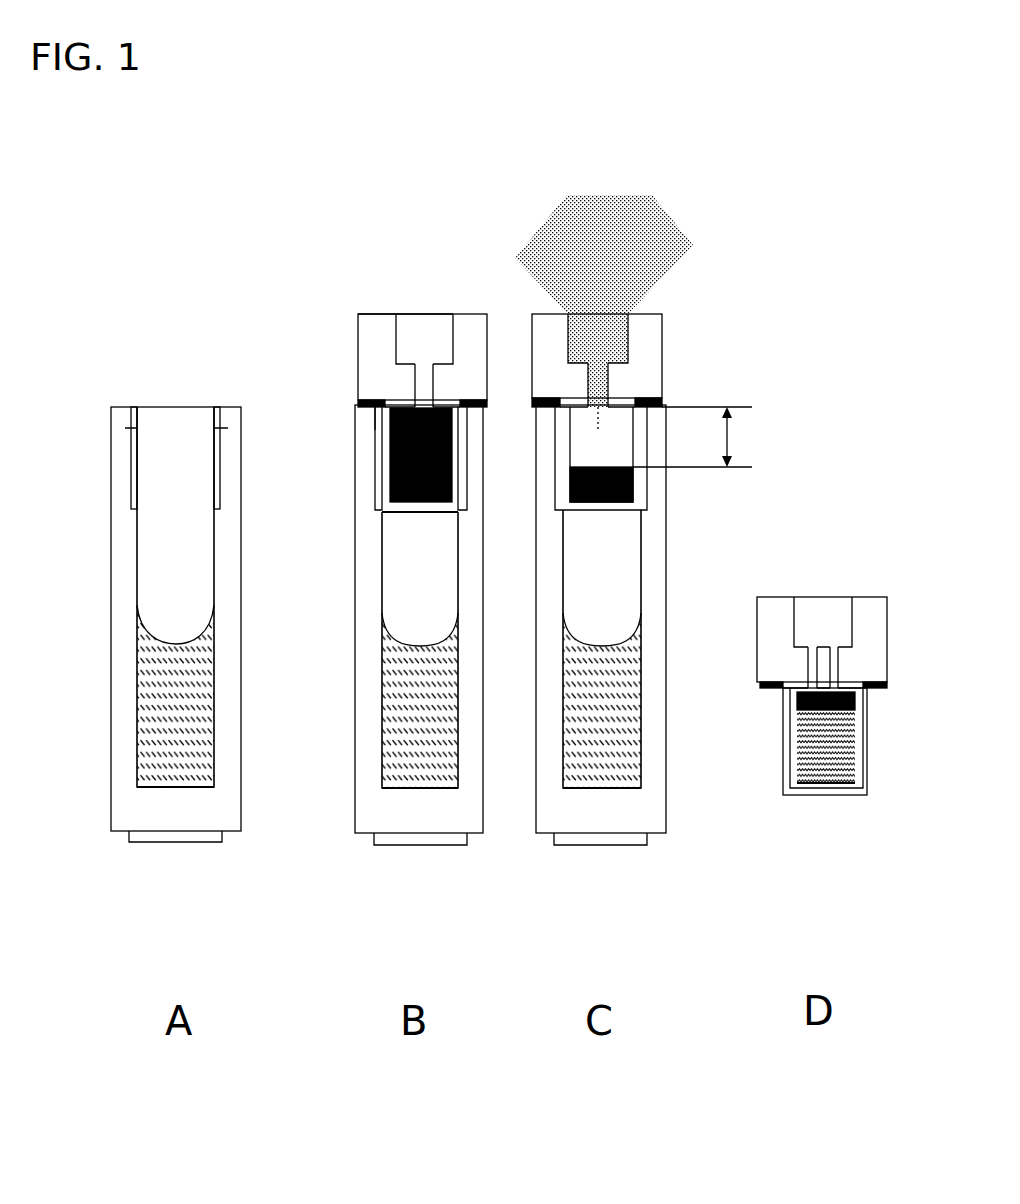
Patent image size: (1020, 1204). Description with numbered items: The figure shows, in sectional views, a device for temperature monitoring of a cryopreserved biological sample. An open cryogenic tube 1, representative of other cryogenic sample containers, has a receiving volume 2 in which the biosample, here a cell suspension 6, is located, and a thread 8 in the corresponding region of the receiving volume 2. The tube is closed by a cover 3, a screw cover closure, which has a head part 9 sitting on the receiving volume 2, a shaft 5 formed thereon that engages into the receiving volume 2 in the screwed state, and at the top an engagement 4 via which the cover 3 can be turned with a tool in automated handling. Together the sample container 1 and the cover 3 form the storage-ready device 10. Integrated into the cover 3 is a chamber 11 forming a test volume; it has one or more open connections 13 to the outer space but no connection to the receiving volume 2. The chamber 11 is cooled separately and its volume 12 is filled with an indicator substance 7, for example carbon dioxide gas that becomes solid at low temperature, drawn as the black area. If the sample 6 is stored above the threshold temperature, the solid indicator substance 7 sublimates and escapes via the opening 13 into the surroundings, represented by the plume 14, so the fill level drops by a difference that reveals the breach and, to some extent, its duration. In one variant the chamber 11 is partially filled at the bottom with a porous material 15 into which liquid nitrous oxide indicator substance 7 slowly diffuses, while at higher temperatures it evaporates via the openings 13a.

In FIG. 1A, the cryogenic tube 1 is at (125, 578).
In FIG. 1B, the cryogenic tube 1 is at (368, 578).
In FIG. 1C, the cryogenic tube 1 is at (548, 578).
In FIG. 1A, the receiving volume 2 is at (176, 486).
In FIG. 1B, the receiving volume 2 is at (420, 650).
In FIG. 1C, the receiving volume 2 is at (602, 649).
In FIG. 1B, the cover 3 is at (369, 314).
In FIG. 1C, the cover 3 is at (555, 322).
In FIG. 1D, the cover 3 is at (778, 638).
In FIG. 1B, the engagement 4 is at (430, 344).
In FIG. 1B, the shaft 5 is at (378, 427).
In FIG. 1A, the cell suspension 6 is at (165, 758).
In FIG. 1B, the cell suspension 6 is at (408, 760).
In FIG. 1C, the cell suspension 6 is at (590, 762).
In FIG. 1B, the indicator substance 7 is at (437, 400).
In FIG. 1C, the indicator substance 7 is at (633, 490).
In FIG. 1D, the indicator substance 7 is at (797, 703).
In FIG. 1A, the thread 8 is at (134, 455).
In FIG. 1B, the head part 9 is at (370, 332).
In FIG. 1B, the device 10 is at (406, 190).
In FIG. 1C, the device 10 is at (572, 180).
In FIG. 1B, the chamber 11 is at (385, 452).
In FIG. 1C, the chamber 11 is at (601, 458).
In FIG. 1D, the chamber 11 is at (806, 725).
In FIG. 1B, the volume 12 is at (390, 485).
In FIG. 1C, the volume 12 is at (612, 428).
In FIG. 1B, the open connection 13 is at (415, 385).
In FIG. 1C, the open connection 13 is at (605, 383).
In FIG. 1D, the openings 13a is at (835, 665).
In FIG. 1C, the escaping indicator substance 14 is at (627, 240).
In FIG. 1D, the porous material 15 is at (815, 755).